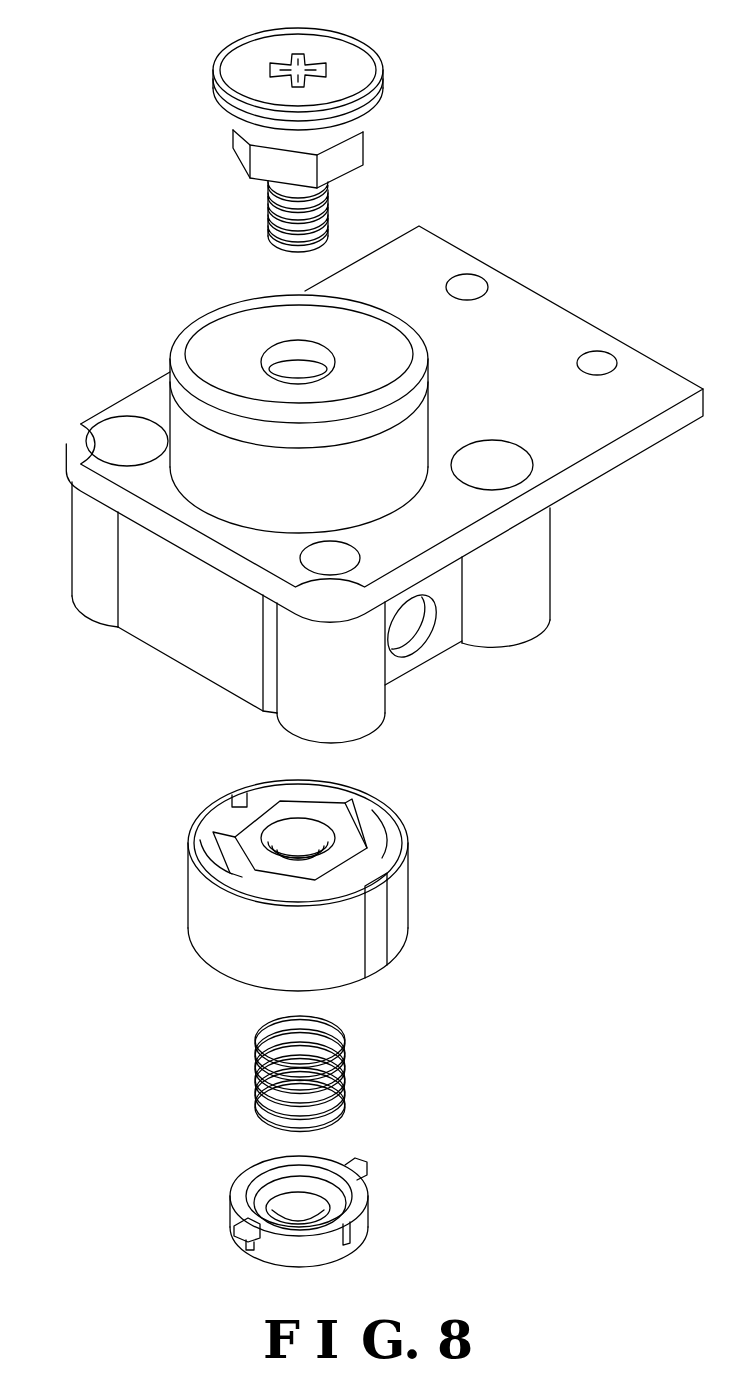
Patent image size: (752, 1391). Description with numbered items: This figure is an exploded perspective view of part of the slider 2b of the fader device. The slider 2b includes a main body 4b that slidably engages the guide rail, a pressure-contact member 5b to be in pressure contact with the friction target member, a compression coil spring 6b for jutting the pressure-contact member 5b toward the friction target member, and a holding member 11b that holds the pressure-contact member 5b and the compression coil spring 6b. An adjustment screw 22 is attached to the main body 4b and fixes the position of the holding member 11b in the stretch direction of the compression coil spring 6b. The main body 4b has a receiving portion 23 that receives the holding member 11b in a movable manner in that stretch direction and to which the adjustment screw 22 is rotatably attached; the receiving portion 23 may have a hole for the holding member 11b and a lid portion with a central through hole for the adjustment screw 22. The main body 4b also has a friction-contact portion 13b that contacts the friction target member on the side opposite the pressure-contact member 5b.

The adjustment screw 22 is at (345, 72).
The slider 2b is at (535, 163).
The main body 4b is at (548, 297).
The receiving portion 23 is at (258, 340).
The friction-contact portion 13b is at (416, 633).
The holding member 11b is at (178, 858).
The compression coil spring 6b is at (245, 1075).
The pressure-contact member 5b is at (220, 1202).